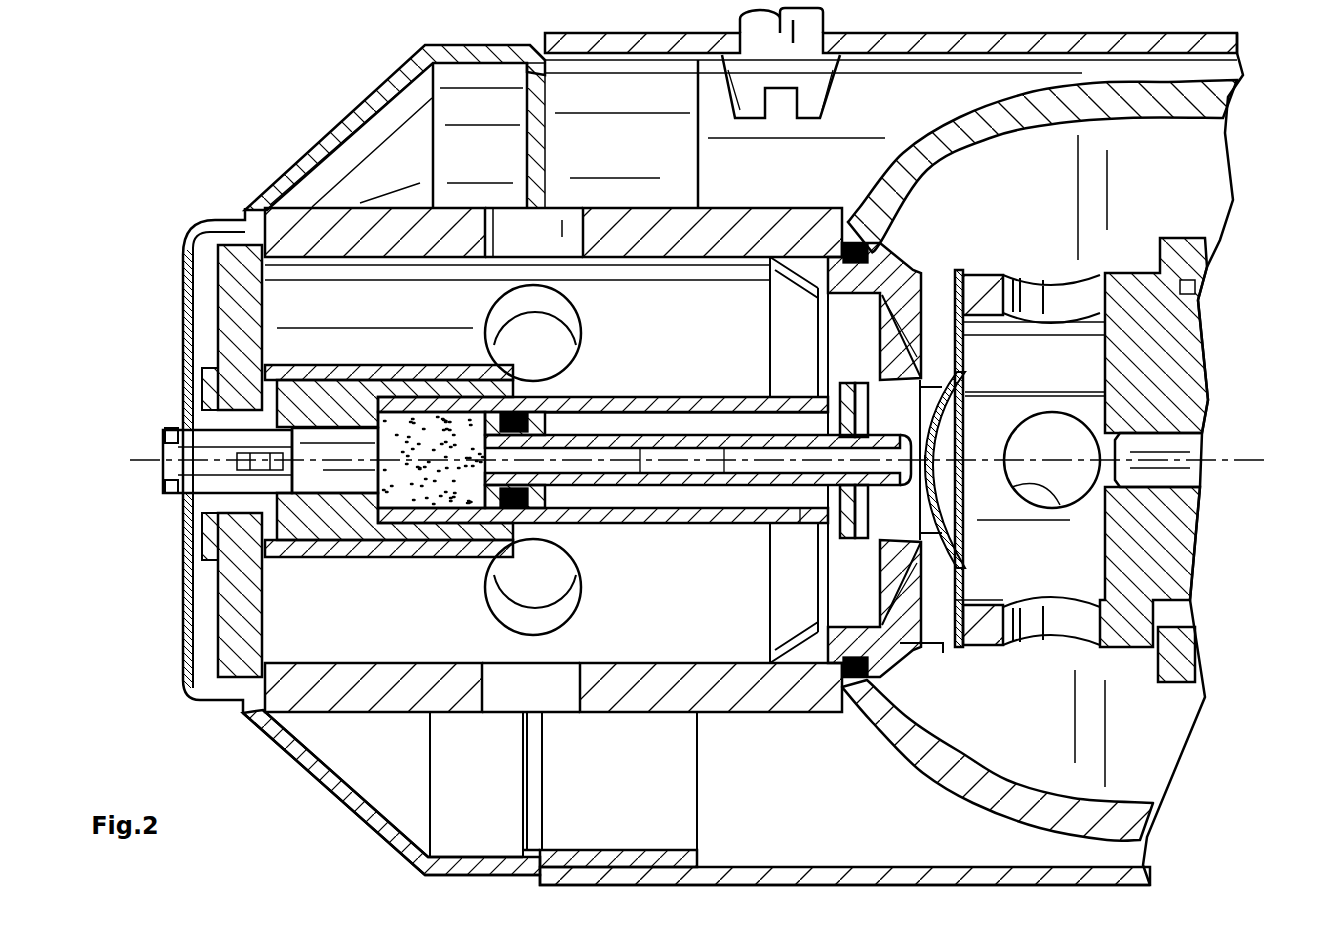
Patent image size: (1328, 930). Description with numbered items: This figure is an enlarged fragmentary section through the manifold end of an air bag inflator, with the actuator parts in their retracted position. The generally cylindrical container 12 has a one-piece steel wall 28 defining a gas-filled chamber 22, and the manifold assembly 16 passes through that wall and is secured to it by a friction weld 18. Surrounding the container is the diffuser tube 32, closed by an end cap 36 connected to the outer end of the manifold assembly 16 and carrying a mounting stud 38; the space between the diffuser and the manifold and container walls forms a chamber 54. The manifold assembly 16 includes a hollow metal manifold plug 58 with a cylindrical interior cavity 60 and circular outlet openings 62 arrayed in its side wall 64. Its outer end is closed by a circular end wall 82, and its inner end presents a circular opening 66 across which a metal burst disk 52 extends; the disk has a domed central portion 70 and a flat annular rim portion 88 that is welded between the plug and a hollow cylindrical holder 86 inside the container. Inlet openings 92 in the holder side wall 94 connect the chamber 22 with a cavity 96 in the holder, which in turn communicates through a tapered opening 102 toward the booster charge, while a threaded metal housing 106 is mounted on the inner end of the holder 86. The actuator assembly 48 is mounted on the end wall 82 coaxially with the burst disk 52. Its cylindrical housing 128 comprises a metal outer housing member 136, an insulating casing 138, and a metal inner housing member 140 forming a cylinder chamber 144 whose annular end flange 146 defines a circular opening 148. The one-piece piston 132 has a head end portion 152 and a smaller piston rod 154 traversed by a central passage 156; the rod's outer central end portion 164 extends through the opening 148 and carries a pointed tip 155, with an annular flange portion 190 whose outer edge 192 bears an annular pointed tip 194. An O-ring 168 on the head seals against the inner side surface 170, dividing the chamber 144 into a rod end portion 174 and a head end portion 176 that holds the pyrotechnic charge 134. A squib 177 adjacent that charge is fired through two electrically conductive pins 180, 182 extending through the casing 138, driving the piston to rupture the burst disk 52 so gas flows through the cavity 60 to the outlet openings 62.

The container 12 is at (932, 776).
The manifold assembly 16 is at (320, 710).
The friction weld 18 is at (855, 240).
The chamber 22 is at (1178, 160).
The one-piece steel wall 28 is at (1210, 103).
The diffuser tube 32 is at (1238, 44).
The end cap 36 is at (382, 105).
The mounting stud 38 is at (808, 75).
The actuator assembly 48 is at (472, 365).
The burst disk 52 is at (958, 346).
The chamber 54 is at (362, 170).
The manifold plug 58 is at (387, 710).
The interior cavity 60 is at (697, 640).
The outlet openings 62 is at (524, 303).
The side wall 64 is at (645, 235).
The circular opening 66 is at (948, 393).
The domed central portion 70 is at (934, 428).
The end wall 82 is at (200, 628).
The holder 86 is at (1175, 352).
The rim portion 88 is at (965, 583).
The inlet openings 92 is at (1070, 300).
The side wall 94 is at (985, 632).
The cavity 96 is at (1095, 535).
The opening 102 is at (1178, 447).
The housing 106 is at (1187, 670).
The cylindrical housing 128 is at (465, 556).
The piston 132 is at (715, 436).
The pyrotechnic charge 134 is at (432, 445).
The outer housing member 136 is at (300, 363).
The casing 138 is at (287, 378).
The inner housing member 140 is at (666, 398).
The cylinder chamber 144 is at (626, 415).
The annular end flange 146 is at (870, 405).
The circular opening 148 is at (806, 490).
The head end portion 152 is at (548, 378).
The piston rod 154 is at (651, 486).
The pointed tip 155 is at (935, 458).
The central passage 156 is at (726, 468).
The outer central end portion 164 is at (933, 482).
The O-ring 168 is at (570, 497).
The inner side surface 170 is at (640, 472).
The rod end portion 174 is at (784, 420).
The head end portion 176 is at (302, 470).
The squib 177 is at (265, 480).
The electrically conductive pin 180 is at (180, 445).
The electrically conductive pin 182 is at (178, 475).
The annular flange portion 190 is at (953, 650).
The outer edge 192 is at (848, 385).
The annular pointed tip 194 is at (856, 540).